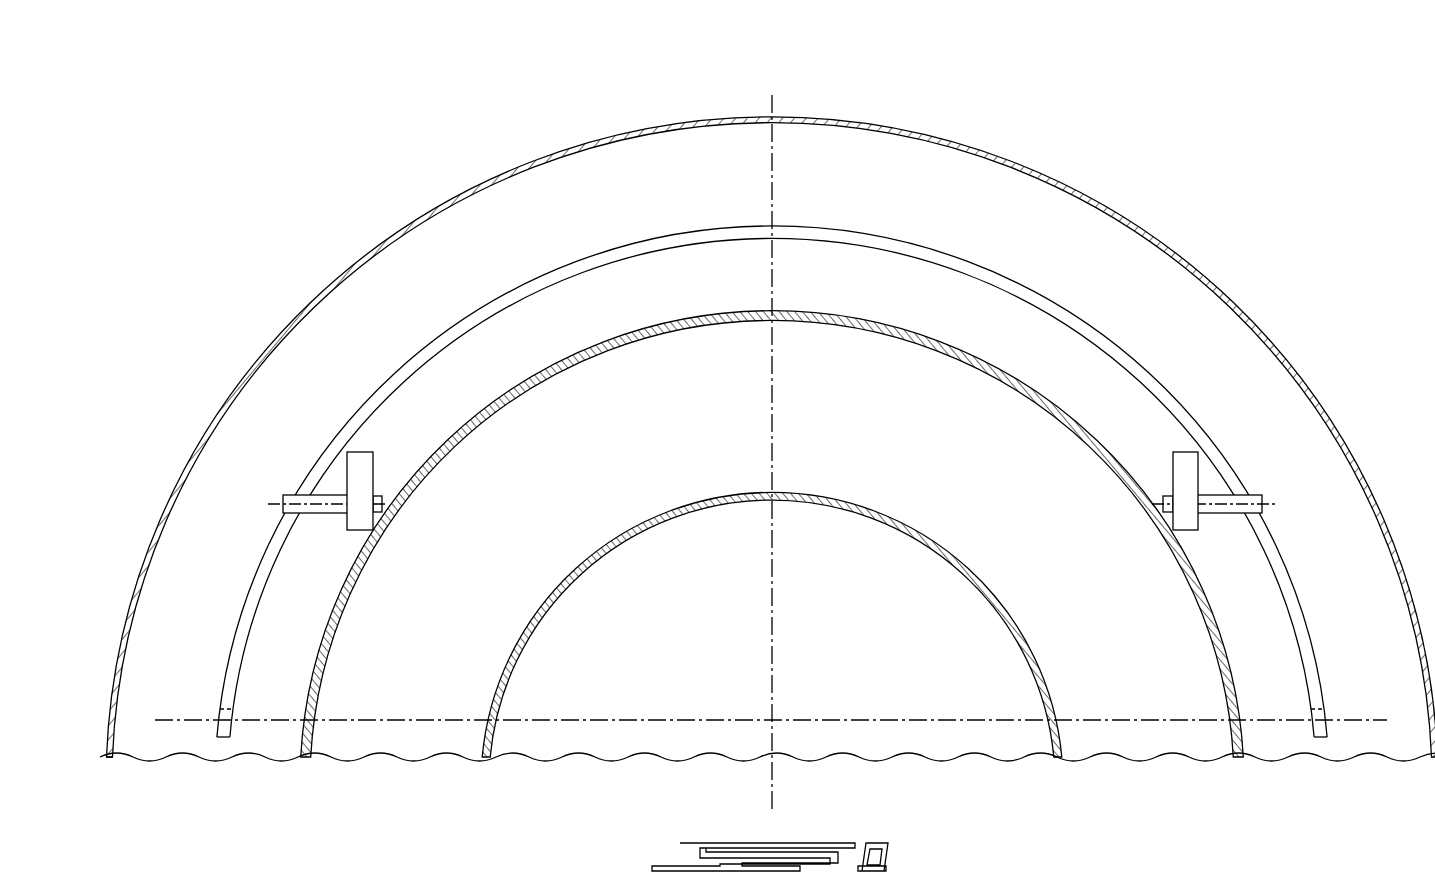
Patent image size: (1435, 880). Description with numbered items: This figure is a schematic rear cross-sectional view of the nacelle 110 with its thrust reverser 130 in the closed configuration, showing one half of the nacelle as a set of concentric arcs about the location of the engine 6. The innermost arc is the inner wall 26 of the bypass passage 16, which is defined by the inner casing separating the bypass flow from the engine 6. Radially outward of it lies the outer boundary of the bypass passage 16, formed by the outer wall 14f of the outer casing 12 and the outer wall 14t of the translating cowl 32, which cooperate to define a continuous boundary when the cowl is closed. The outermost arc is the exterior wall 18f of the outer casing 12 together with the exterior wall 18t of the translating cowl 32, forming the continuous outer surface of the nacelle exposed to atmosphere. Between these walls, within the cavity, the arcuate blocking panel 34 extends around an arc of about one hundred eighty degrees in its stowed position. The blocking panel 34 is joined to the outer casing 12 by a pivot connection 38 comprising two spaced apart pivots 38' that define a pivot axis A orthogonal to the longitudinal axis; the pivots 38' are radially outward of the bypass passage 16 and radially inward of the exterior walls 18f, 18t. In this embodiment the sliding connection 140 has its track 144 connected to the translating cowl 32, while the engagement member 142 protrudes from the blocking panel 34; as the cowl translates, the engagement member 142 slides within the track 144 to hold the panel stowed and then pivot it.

The nacelle 110 is at (766, 424).
The thrust reverser 130 is at (760, 455).
The blocking panel 34 is at (767, 455).
The outer casing 12 is at (766, 424).
The translating cowl 32 is at (766, 424).
The track 144 is at (733, 375).
The sliding connection 140 is at (760, 375).
The engagement member 142 is at (764, 473).
The bypass passage 16 is at (586, 451).
The engine 6 is at (748, 452).
The outer wall 14f is at (755, 569).
The outer wall 14t is at (755, 569).
The exterior wall 18f is at (135, 792).
The exterior wall 18t is at (135, 792).
The pivot connection 38 is at (767, 762).
The pivot 38' is at (767, 762).
The pivot axis A is at (771, 771).
The inner wall 26 is at (772, 658).